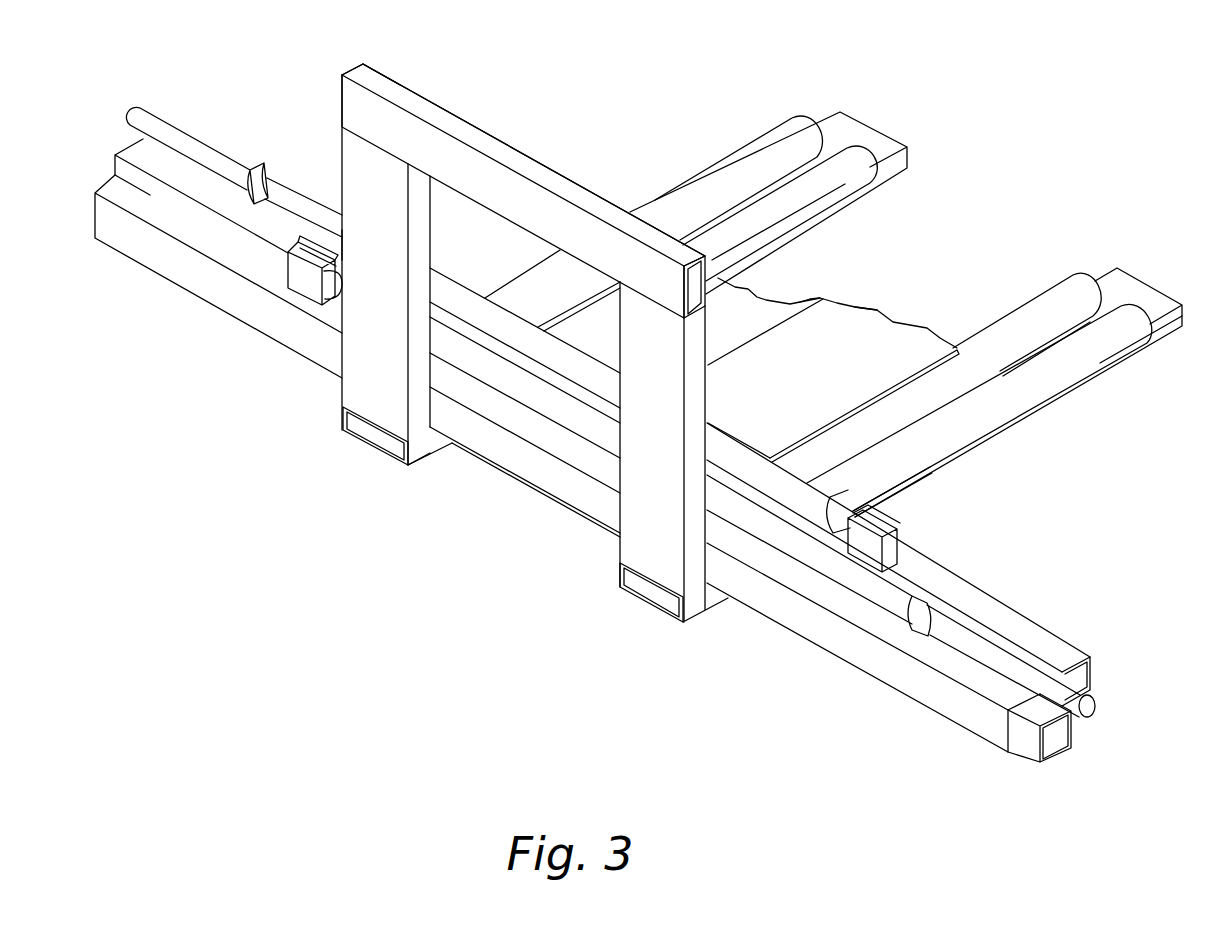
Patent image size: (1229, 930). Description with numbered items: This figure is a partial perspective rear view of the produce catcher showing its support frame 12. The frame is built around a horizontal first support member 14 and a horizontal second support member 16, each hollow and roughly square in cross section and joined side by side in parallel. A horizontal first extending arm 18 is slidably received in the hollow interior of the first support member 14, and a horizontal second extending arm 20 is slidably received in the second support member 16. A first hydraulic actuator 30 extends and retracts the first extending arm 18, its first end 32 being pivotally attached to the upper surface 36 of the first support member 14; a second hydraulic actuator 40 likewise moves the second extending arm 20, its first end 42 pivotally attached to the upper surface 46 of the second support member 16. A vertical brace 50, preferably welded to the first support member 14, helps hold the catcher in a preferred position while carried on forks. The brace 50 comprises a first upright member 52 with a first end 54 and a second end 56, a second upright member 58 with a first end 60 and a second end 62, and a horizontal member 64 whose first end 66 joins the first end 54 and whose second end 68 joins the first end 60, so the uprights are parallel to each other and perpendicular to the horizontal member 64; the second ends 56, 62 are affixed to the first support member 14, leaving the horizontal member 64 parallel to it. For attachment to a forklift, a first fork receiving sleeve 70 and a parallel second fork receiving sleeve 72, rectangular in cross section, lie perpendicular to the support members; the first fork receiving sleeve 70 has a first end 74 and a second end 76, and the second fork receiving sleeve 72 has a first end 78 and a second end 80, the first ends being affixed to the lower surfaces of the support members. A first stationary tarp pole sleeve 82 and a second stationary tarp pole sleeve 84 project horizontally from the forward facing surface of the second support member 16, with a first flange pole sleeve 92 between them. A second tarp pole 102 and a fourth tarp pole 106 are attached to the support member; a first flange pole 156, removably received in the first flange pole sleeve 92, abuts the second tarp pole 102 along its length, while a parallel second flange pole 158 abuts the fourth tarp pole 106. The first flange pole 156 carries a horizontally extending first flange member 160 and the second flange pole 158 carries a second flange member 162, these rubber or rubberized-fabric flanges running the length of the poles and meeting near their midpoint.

The support frame 12 is at (330, 588).
The first support member 14 is at (826, 632).
The second support member 16 is at (1030, 630).
The first extending arm 18 is at (1022, 743).
The second extending arm 20 is at (132, 153).
The first hydraulic actuator 30 is at (763, 520).
The first end 32 is at (320, 288).
The upper surface 36 is at (211, 234).
The second hydraulic actuator 40 is at (447, 292).
The first end 42 is at (890, 497).
The upper surface 46 is at (983, 607).
The vertical brace 50 is at (472, 130).
The first upright member 52 is at (640, 472).
The first end 54 is at (760, 292).
The second end 56 is at (633, 547).
The second upright member 58 is at (358, 245).
The first end 60 is at (357, 140).
The second end 62 is at (355, 390).
The horizontal member 64 is at (524, 160).
The first end 66 is at (668, 245).
The second end 68 is at (362, 76).
The first fork receiving sleeve 70 is at (1000, 438).
The second fork receiving sleeve 72 is at (850, 183).
The first end 74 is at (705, 612).
The second end 76 is at (1170, 323).
The first end 78 is at (405, 468).
The second end 80 is at (897, 168).
The first stationary tarp pole sleeve 82 is at (930, 457).
The second stationary tarp pole sleeve 84 is at (515, 292).
The first flange pole sleeve 92 is at (873, 413).
The second tarp pole 102 is at (1057, 375).
The fourth tarp pole 106 is at (733, 172).
The first flange pole 156 is at (1052, 310).
The second flange pole 158 is at (784, 214).
The first flange member 160 is at (872, 362).
The second flange member 162 is at (822, 298).